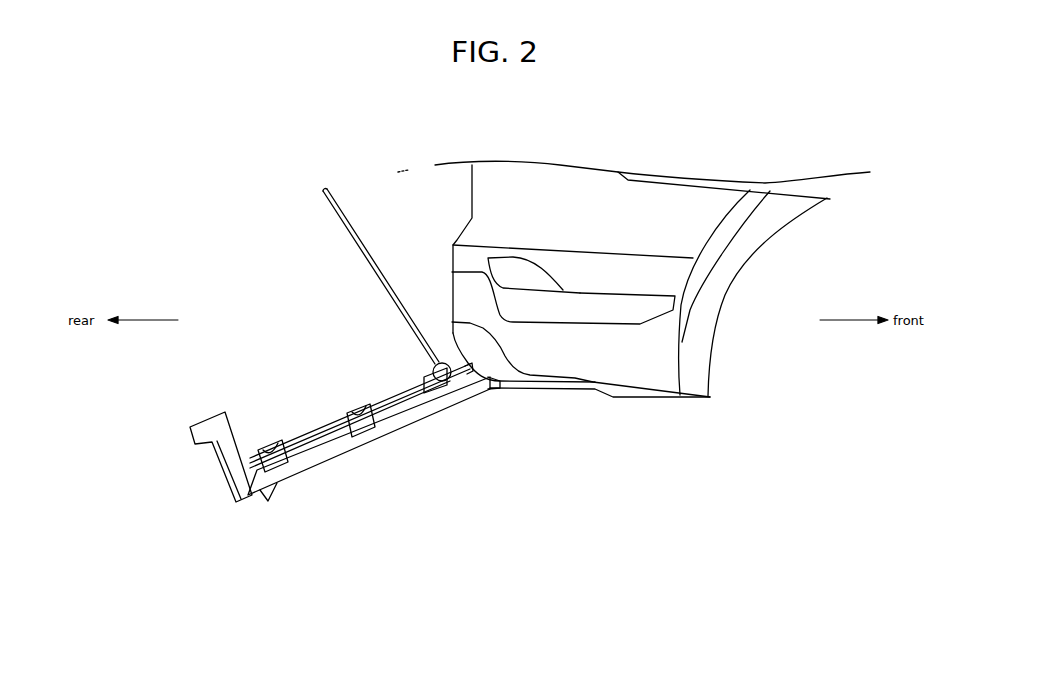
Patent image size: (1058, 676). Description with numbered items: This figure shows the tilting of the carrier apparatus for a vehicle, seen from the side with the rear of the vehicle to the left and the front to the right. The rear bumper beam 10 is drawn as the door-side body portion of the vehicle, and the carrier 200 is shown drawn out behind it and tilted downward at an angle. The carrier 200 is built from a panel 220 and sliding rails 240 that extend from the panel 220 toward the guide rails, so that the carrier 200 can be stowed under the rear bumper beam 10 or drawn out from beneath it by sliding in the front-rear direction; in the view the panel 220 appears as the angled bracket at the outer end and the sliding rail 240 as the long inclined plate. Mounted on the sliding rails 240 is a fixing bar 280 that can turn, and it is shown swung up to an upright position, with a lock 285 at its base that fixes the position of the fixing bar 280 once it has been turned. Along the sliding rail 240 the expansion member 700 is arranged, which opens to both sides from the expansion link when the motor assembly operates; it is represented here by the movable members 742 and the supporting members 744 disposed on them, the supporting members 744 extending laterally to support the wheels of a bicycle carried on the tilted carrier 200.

The rear bumper beam 10 is at (615, 357).
The carrier 200 is at (319, 366).
The panel 220 is at (238, 462).
The sliding rails 240 is at (385, 427).
The fixing bar 280 is at (352, 212).
The lock 285 is at (445, 376).
The expansion member 700 is at (361, 390).
The movable members 742 is at (298, 435).
The supporting members 744 is at (331, 408).